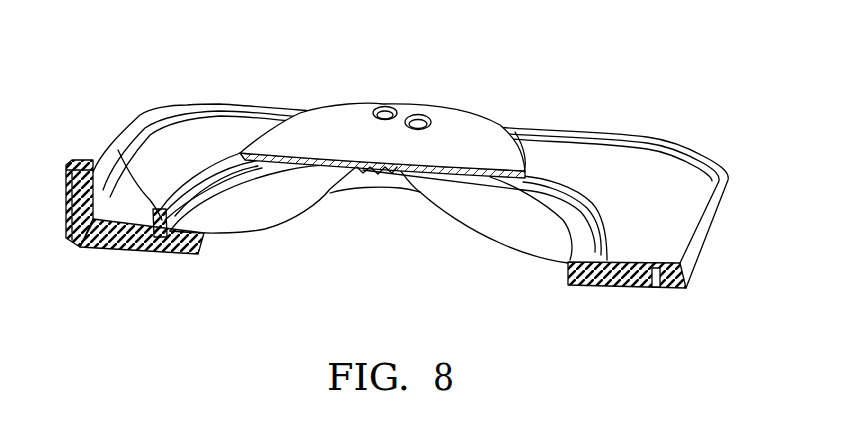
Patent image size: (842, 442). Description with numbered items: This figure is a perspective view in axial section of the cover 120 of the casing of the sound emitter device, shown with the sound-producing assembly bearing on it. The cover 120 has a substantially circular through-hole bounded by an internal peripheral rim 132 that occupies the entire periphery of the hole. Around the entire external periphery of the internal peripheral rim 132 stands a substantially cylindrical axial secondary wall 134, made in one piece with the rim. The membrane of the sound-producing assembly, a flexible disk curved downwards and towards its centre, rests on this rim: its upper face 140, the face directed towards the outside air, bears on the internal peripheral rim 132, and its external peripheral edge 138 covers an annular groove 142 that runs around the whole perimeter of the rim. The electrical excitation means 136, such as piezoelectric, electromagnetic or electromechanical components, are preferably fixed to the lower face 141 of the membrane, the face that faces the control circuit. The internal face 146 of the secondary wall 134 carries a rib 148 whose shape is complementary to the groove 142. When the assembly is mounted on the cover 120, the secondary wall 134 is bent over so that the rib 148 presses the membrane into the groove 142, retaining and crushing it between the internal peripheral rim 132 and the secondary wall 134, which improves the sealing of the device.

The cover 120 is at (698, 120).
The internal peripheral rim 132 is at (147, 252).
The substantially cylindrical axial secondary wall 134 is at (118, 150).
The electrical excitation means 136 is at (453, 125).
The external peripheral edge 138 is at (570, 213).
The upper face of the membrane 140 is at (497, 247).
The lower face 141 is at (510, 223).
The annular groove 142 is at (168, 248).
The internal face 146 is at (193, 183).
The rib 148 is at (223, 186).